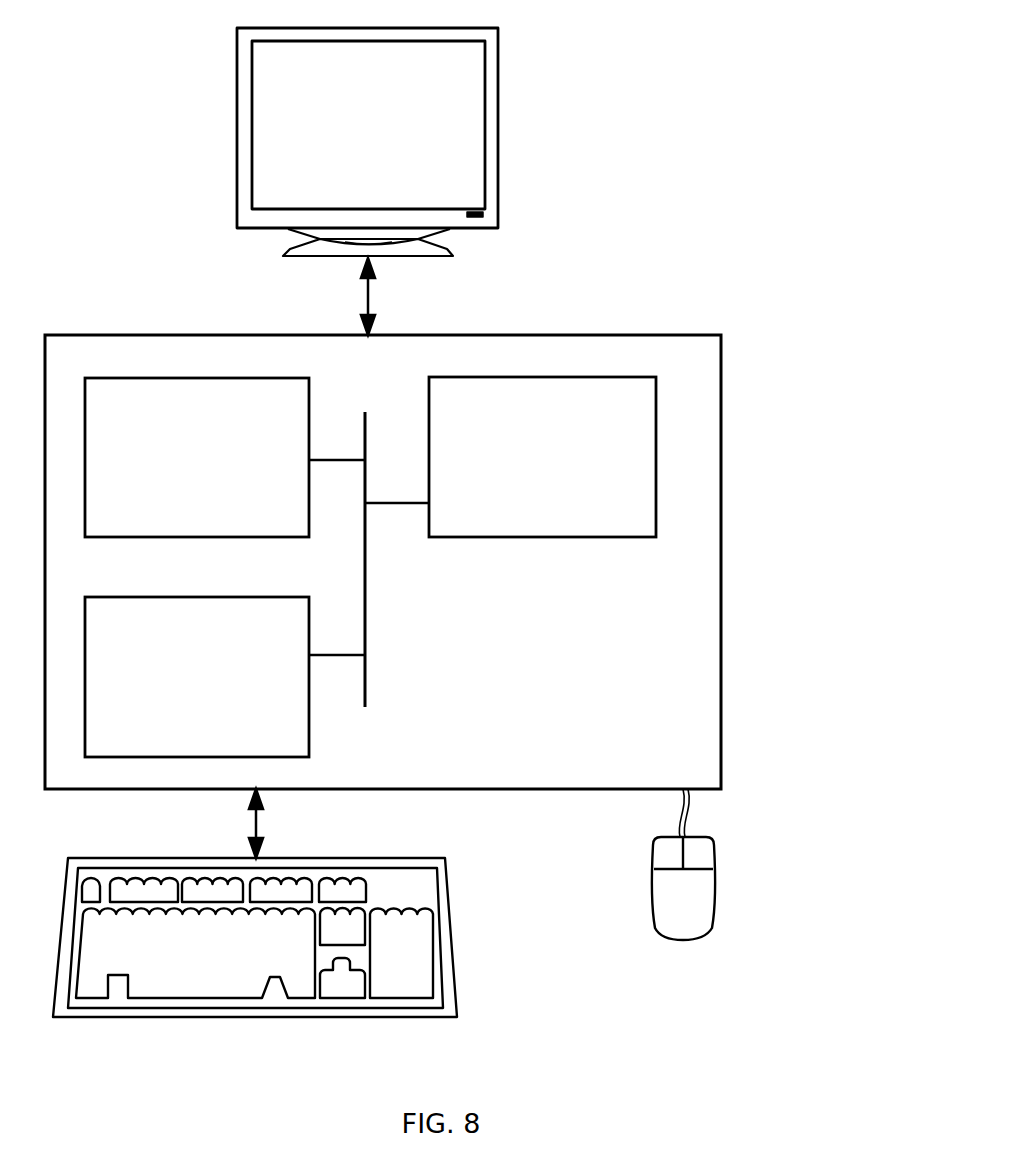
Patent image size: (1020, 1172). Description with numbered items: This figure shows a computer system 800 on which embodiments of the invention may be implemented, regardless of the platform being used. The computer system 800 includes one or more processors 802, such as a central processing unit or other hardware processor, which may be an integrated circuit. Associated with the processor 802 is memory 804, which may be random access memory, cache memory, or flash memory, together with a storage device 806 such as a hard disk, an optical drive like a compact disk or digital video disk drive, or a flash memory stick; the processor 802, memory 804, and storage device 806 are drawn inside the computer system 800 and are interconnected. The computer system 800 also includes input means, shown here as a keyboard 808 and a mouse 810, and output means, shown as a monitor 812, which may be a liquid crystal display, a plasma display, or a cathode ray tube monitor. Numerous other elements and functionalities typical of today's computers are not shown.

The computer system 800 is at (783, 336).
The processor 802 is at (521, 454).
The memory 804 is at (172, 457).
The storage device 806 is at (174, 674).
The keyboard 808 is at (172, 952).
The mouse 810 is at (724, 952).
The monitor 812 is at (342, 134).